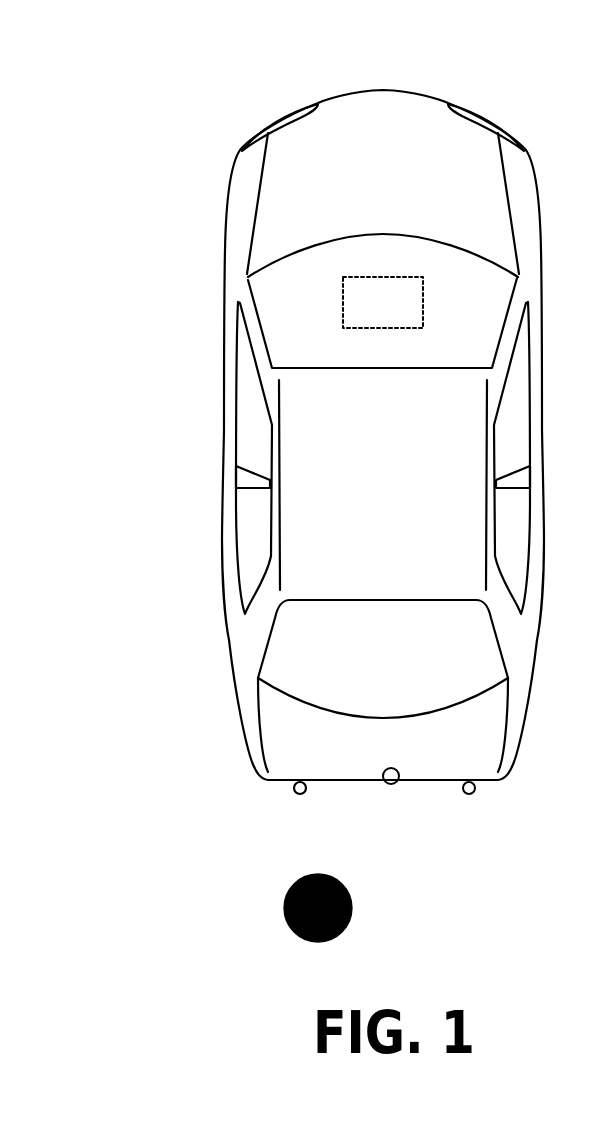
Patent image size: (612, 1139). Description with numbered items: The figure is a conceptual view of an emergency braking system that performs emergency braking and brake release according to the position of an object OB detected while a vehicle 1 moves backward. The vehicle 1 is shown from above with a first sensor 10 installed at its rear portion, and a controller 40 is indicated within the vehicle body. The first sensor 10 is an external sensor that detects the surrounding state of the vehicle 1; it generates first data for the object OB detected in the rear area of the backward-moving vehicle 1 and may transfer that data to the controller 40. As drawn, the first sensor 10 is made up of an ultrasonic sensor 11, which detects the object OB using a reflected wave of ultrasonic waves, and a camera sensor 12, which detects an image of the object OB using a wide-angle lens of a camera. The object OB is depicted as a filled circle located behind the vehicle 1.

The vehicle 1 is at (118, 150).
The controller 40 is at (357, 309).
The first sensor 10 is at (449, 879).
The ultrasonic sensor 11 is at (471, 794).
The camera sensor 12 is at (393, 784).
The object OB is at (284, 912).